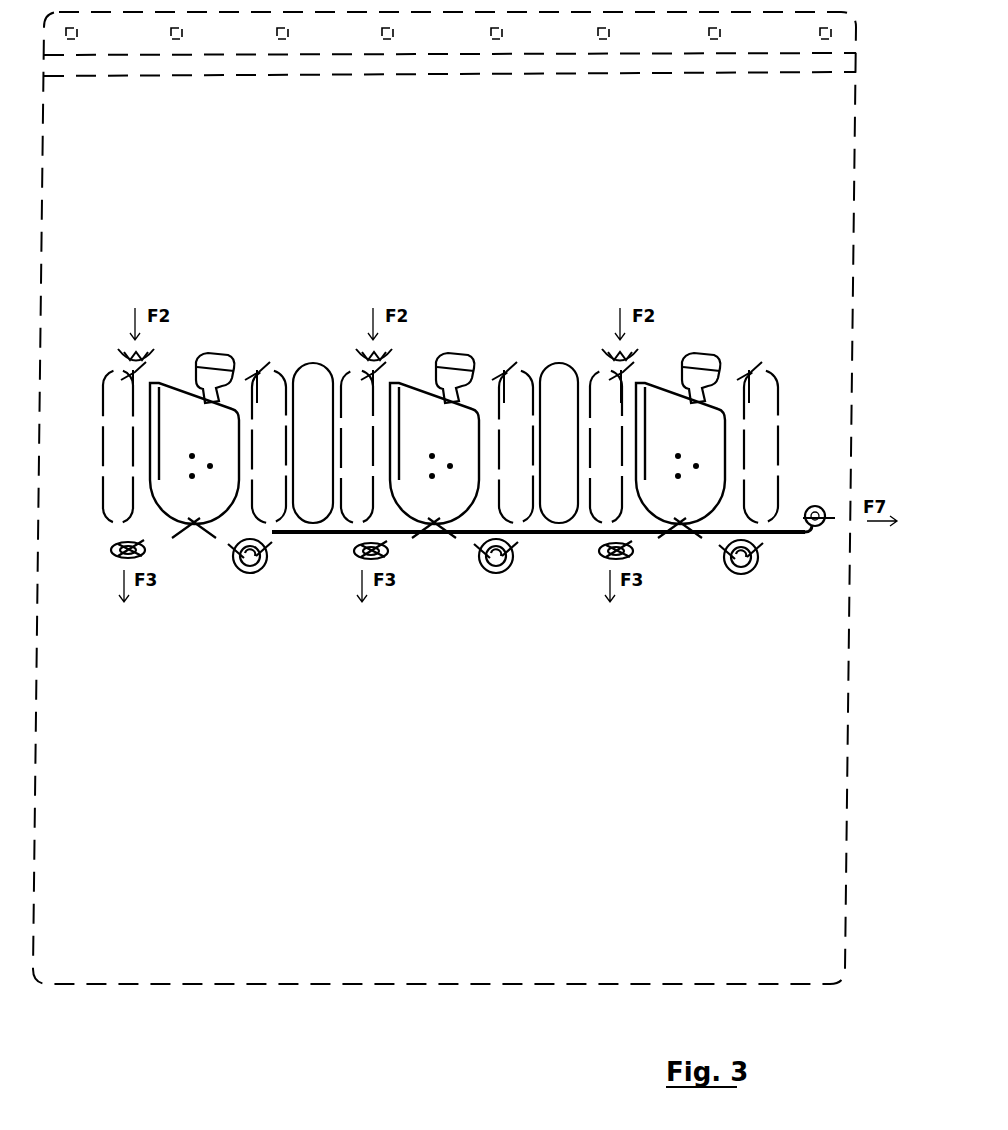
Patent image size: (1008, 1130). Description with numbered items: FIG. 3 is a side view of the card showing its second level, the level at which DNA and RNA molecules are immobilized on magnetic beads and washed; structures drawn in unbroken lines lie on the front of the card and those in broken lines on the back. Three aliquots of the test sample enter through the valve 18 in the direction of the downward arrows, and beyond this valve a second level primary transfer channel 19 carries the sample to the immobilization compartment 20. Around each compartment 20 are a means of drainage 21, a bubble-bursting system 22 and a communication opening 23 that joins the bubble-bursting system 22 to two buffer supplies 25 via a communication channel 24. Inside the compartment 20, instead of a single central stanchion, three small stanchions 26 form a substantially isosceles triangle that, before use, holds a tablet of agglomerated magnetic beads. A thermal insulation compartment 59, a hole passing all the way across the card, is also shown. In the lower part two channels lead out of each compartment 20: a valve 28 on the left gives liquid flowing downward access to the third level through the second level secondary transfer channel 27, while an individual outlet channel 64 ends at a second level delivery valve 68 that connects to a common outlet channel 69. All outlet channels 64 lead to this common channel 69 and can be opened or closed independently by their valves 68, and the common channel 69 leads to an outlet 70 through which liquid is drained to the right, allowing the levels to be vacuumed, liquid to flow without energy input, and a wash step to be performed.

The valve 18 is at (380, 358).
The second level primary transfer channel 19 is at (153, 362).
The immobilization compartment 20 is at (705, 437).
The means of drainage 21 is at (647, 447).
The bubble-bursting system 22 is at (235, 357).
The communication opening 23 is at (706, 350).
The communication channel 24 is at (665, 370).
The buffer supplies 25 is at (788, 395).
The small stanchions 26 is at (433, 480).
The second level secondary transfer channel 27 is at (168, 545).
The valve 28 is at (345, 580).
The thermal insulation compartment 59 is at (558, 362).
The individual outlet channel 64 is at (205, 545).
The second level delivery valve 68 is at (258, 572).
The common outlet channel 69 is at (535, 535).
The outlet 70 is at (836, 512).